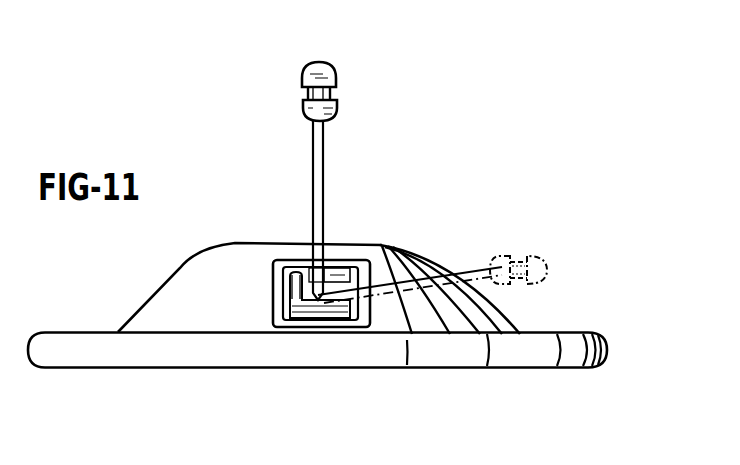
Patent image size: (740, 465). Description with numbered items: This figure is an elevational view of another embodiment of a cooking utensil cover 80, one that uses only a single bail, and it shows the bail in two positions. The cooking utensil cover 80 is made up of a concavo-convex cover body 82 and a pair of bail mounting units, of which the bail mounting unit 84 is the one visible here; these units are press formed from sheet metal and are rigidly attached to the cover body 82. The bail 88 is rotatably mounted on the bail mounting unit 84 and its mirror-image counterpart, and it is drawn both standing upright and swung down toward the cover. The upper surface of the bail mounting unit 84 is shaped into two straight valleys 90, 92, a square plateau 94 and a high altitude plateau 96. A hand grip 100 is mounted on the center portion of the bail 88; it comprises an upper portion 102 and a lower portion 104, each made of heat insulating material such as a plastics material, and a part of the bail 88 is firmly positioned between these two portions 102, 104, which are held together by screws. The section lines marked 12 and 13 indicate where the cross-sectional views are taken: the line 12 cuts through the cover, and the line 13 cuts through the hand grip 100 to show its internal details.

The section line 12- 12 is at (320, 58).
The section line 13- 13 is at (316, 45).
The cooking utensil cover 80 is at (133, 291).
The cover body 82 is at (215, 258).
The bail mounting unit 84 is at (274, 298).
The bail 88 is at (313, 186).
The straight valley 90 is at (407, 259).
The straight valley 92 is at (329, 265).
The square plateau 94 is at (348, 270).
The high altitude plateau 96 is at (300, 264).
The hand grip 100 is at (296, 97).
The upper portion 102 is at (337, 75).
The lower portion 104 is at (337, 110).